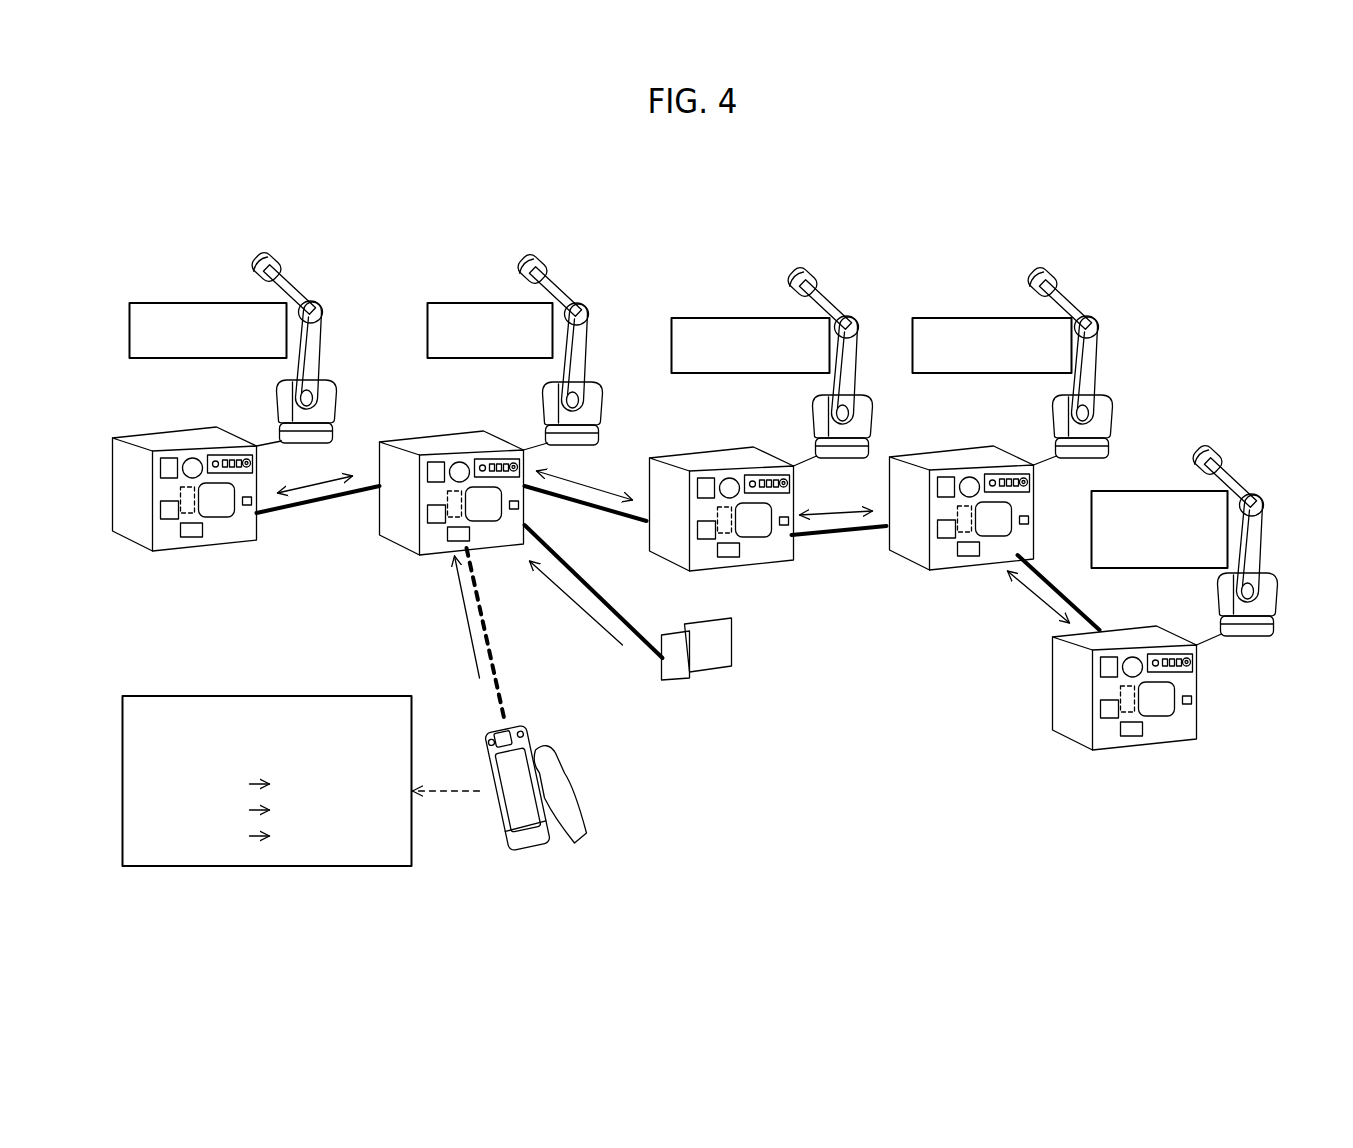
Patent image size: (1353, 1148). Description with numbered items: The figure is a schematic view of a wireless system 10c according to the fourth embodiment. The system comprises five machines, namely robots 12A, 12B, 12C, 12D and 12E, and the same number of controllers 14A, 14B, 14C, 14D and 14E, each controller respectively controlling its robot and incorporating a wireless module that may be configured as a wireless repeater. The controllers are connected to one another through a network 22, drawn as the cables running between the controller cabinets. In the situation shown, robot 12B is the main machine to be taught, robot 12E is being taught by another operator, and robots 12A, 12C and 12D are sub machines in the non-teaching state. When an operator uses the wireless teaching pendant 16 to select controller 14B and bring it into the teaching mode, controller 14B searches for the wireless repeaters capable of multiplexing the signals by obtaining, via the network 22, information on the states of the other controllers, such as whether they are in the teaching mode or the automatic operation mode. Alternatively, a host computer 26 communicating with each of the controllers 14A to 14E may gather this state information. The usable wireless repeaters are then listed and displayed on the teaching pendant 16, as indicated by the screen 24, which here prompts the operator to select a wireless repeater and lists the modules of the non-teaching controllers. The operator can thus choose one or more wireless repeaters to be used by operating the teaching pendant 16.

The wireless system 10c is at (244, 192).
The robot 12A is at (302, 268).
The robot 12B is at (570, 270).
The robot 12C is at (827, 278).
The robot 12D is at (1073, 278).
The robot 12E is at (1242, 455).
The controller 14A is at (165, 563).
The controller 14B is at (397, 557).
The controller 14C is at (760, 572).
The controller 14D is at (978, 575).
The controller 14E is at (1138, 757).
The wireless teaching pendant 16 is at (553, 740).
The network 22 is at (327, 502).
The list of usable wireless repeaters 24 is at (363, 868).
The host computer 26 is at (712, 688).